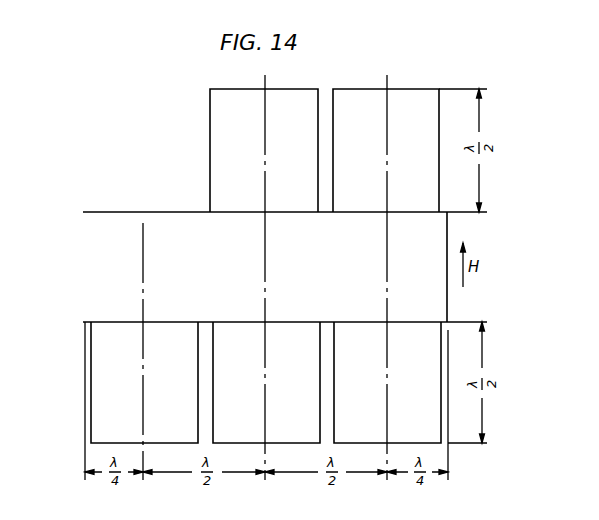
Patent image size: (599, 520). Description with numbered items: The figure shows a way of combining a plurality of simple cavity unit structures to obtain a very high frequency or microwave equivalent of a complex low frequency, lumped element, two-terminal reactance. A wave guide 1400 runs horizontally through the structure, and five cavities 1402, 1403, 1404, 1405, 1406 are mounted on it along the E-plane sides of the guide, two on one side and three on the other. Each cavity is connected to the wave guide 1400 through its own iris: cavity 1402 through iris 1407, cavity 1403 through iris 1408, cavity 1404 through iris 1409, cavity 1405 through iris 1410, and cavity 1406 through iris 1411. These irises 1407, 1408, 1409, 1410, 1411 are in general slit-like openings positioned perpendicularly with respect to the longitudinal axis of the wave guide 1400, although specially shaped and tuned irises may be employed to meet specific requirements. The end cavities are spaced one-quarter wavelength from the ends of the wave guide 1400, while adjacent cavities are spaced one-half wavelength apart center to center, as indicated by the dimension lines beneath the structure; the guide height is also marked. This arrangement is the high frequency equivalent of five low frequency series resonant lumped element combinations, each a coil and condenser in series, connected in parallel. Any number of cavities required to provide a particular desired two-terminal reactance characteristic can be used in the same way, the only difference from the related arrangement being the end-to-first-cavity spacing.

The wave guide 1400 is at (165, 212).
The cavity 1402 is at (210, 128).
The cavity 1403 is at (428, 89).
The cavity 1404 is at (441, 443).
The cavity 1405 is at (242, 443).
The cavity 1406 is at (91, 412).
The iris 1407 is at (266, 213).
The iris 1408 is at (388, 213).
The iris 1409 is at (389, 321).
The iris 1410 is at (267, 321).
The iris 1411 is at (146, 321).